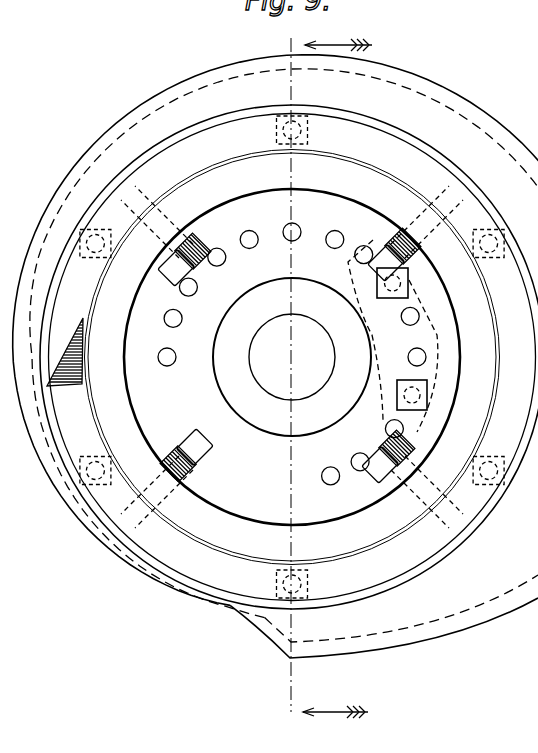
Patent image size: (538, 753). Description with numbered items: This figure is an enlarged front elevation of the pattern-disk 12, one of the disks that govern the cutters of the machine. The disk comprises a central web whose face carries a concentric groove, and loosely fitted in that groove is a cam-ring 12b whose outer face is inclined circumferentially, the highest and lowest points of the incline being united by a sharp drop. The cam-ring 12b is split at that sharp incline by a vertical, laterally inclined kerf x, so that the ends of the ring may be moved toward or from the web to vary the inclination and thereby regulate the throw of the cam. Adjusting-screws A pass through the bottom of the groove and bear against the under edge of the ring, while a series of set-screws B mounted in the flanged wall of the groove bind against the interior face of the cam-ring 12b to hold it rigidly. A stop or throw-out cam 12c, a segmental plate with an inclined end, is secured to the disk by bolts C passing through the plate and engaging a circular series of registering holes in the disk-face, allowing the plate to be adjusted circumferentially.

The pattern-disk 12 is at (292, 357).
The cam-ring 12b is at (188, 546).
The stop or throw-out cam 12c is at (412, 330).
The adjusting-screws A is at (480, 234).
The set-screws B is at (192, 276).
The bolts C is at (332, 249).
The kerf x is at (78, 342).